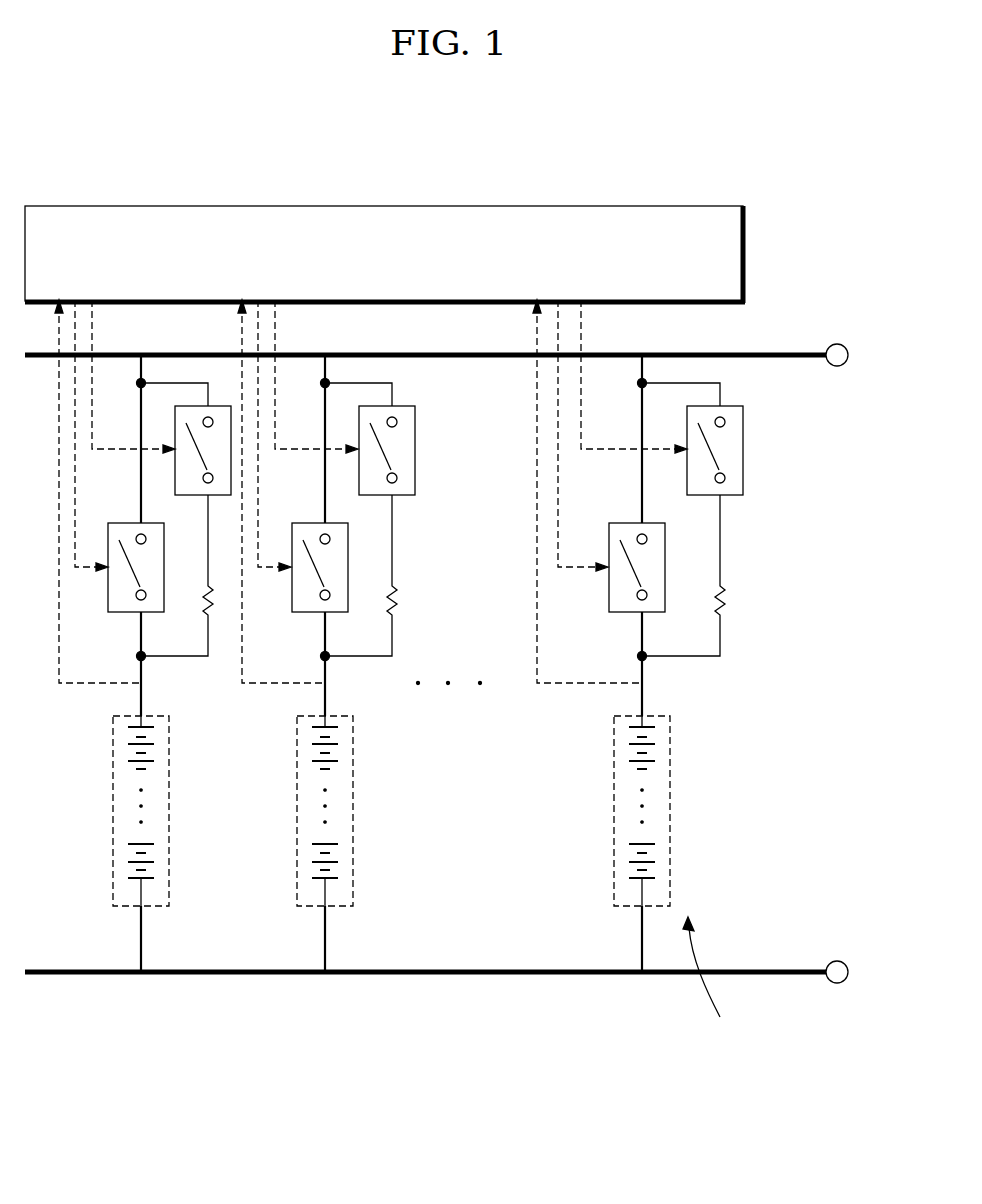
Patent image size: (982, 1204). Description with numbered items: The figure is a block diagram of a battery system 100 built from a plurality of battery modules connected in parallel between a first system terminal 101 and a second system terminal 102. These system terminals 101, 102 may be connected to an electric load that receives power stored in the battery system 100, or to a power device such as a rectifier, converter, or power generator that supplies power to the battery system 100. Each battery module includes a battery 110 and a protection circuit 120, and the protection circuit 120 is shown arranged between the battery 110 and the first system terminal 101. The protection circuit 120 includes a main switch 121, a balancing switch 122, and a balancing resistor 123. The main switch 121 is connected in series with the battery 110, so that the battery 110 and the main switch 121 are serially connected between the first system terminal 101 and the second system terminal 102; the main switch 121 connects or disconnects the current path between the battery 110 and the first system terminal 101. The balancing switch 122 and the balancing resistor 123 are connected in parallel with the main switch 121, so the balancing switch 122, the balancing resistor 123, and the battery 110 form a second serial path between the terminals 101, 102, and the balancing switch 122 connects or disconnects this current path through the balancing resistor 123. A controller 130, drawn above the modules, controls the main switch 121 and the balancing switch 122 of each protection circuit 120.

The battery system 100 is at (818, 181).
The first system terminal 101 is at (837, 366).
The second system terminal 102 is at (837, 983).
The battery 110 is at (670, 742).
The protection circuit 120 is at (813, 447).
The main switch 121 is at (664, 562).
The balancing switch 122 is at (743, 461).
The balancing resistor 123 is at (725, 600).
The controller 130 is at (640, 206).